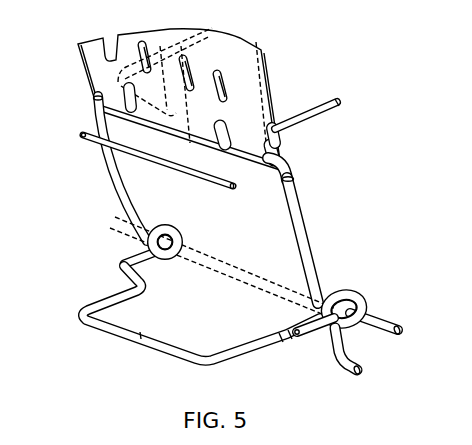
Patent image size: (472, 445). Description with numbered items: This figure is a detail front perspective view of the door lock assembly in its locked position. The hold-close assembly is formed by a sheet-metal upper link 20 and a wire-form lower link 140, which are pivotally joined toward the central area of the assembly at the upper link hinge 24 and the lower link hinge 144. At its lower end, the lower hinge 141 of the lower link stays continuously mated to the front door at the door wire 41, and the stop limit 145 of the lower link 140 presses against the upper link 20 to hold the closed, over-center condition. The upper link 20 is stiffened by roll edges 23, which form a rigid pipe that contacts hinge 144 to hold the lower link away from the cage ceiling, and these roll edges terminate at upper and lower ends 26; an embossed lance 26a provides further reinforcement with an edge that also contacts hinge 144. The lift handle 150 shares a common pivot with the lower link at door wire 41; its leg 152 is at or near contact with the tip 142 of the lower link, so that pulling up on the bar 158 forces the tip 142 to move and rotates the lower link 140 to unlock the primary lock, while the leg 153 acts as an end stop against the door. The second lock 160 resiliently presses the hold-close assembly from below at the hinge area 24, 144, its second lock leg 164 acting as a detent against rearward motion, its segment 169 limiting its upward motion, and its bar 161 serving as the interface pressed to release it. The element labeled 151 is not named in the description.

The upper link 20 is at (100, 77).
The roll edges 23 is at (261, 80).
The upper link hinge 24 is at (252, 159).
The upper and lower ends 26 is at (280, 163).
The embossed lance 26a is at (220, 138).
The door wire 41 is at (383, 317).
The lower link 140 is at (115, 192).
The lower hinge 141 is at (177, 227).
The tip 142 is at (292, 328).
The hinge 144 is at (263, 165).
The stop limit 145 is at (165, 42).
The lift handle 150 is at (165, 323).
The loop 151 is at (157, 224).
The leg 152 is at (292, 345).
The leg 153 is at (362, 373).
The bar 158 is at (133, 346).
The second lock 160 is at (303, 110).
The bar 161 is at (126, 146).
The second lock leg 164 is at (278, 143).
The segment 169 is at (81, 134).